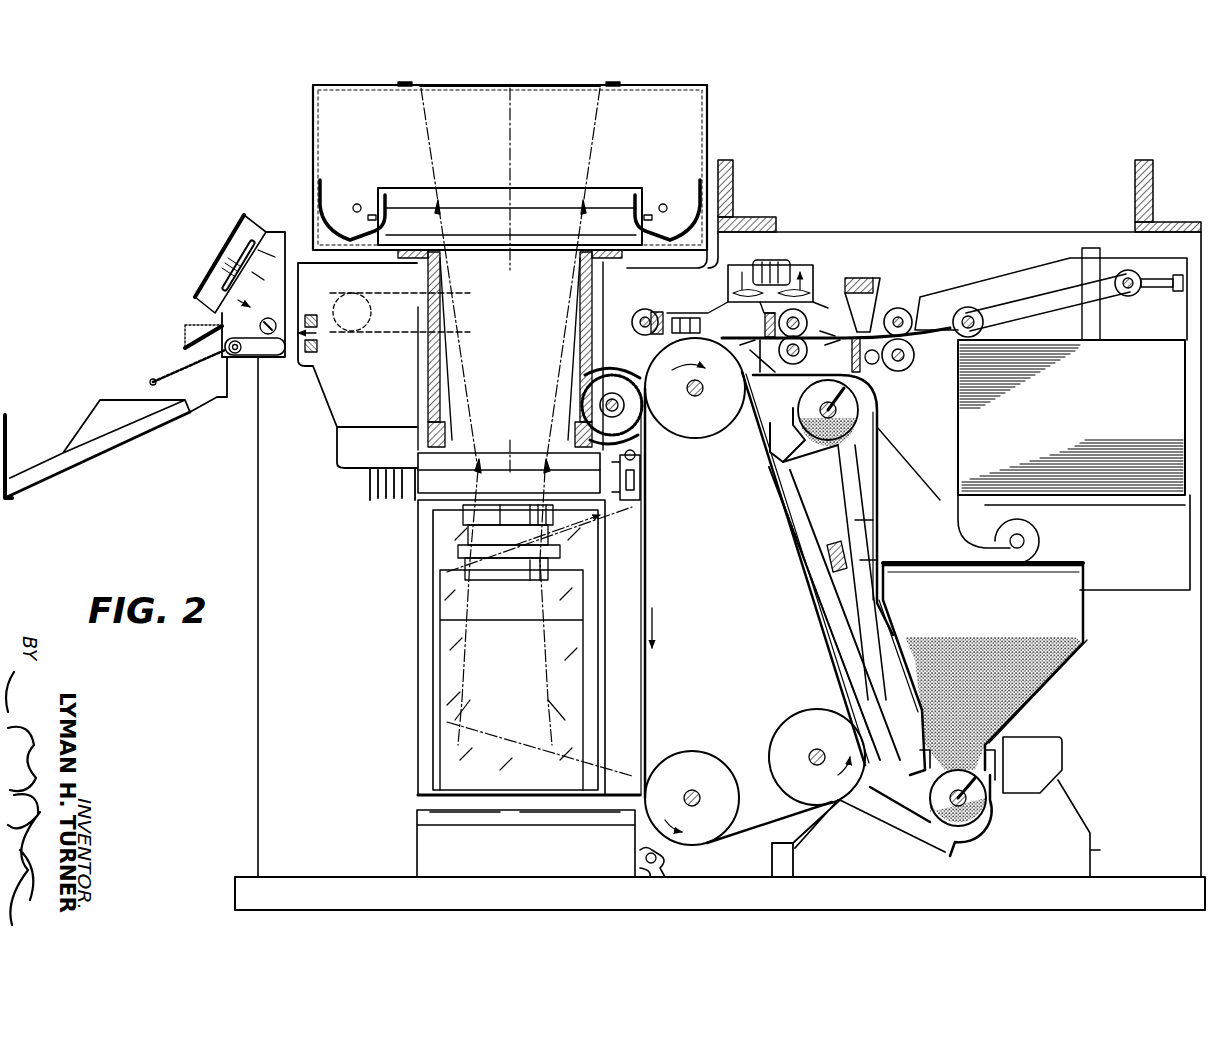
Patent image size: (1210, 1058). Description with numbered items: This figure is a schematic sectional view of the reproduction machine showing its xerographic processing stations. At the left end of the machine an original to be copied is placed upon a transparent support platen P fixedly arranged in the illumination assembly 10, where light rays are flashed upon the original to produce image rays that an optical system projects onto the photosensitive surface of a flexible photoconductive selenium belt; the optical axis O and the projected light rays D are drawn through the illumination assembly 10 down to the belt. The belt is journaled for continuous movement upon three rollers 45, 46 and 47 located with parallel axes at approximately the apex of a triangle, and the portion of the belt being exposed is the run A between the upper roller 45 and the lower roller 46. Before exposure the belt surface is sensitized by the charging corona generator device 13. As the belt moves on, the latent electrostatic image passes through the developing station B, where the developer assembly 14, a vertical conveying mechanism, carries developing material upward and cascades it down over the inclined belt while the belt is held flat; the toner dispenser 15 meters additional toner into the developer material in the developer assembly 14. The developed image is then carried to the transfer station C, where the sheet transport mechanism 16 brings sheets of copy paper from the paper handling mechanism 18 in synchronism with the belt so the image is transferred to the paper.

The illumination assembly 10 is at (290, 143).
The charging corona generator device 13 is at (632, 484).
The developer assembly 14 is at (874, 496).
The toner dispenser 15 is at (1050, 680).
The sheet transport mechanism 16 is at (800, 250).
The paper handling mechanism 18 is at (985, 256).
The upper roller 45 is at (712, 435).
The lower roller 46 is at (708, 766).
The roller 47 is at (778, 725).
The photoconductive belt A is at (648, 572).
The developing station B is at (802, 580).
The transfer station C is at (695, 388).
The optical axis O is at (512, 110).
The transparent support platen P is at (428, 87).
The light ray D is at (560, 80).